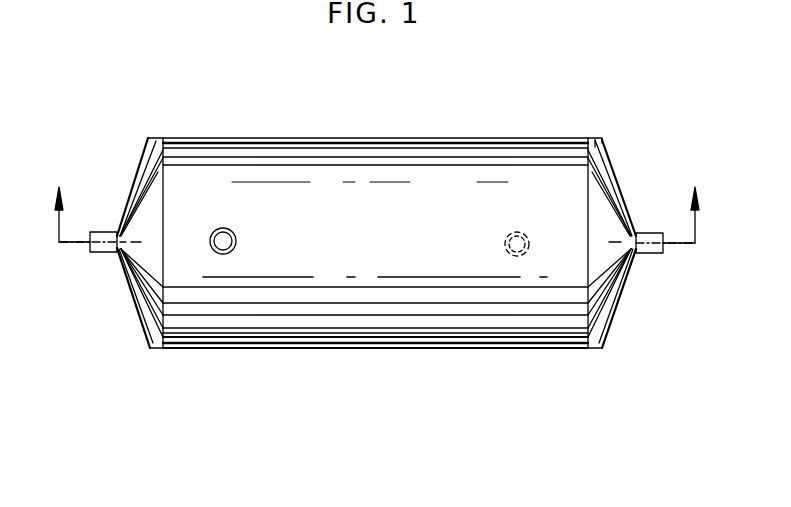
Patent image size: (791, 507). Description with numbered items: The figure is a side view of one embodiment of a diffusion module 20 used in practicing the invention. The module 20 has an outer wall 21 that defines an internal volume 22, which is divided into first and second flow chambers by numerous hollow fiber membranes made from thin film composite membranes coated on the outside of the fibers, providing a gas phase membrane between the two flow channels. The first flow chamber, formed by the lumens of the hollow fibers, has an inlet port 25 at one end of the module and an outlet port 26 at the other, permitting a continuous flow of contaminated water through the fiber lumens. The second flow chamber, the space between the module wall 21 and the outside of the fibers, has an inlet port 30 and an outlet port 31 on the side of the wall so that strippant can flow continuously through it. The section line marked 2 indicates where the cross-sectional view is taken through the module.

The diffusion module 20 is at (362, 127).
The outer wall 21 is at (477, 145).
The internal volume 22 is at (264, 350).
The inlet port 25 is at (643, 253).
The outlet port 26 is at (98, 254).
The inlet port 30 is at (229, 230).
The outlet port 31 is at (512, 230).
The section line 2- 2 is at (376, 201).